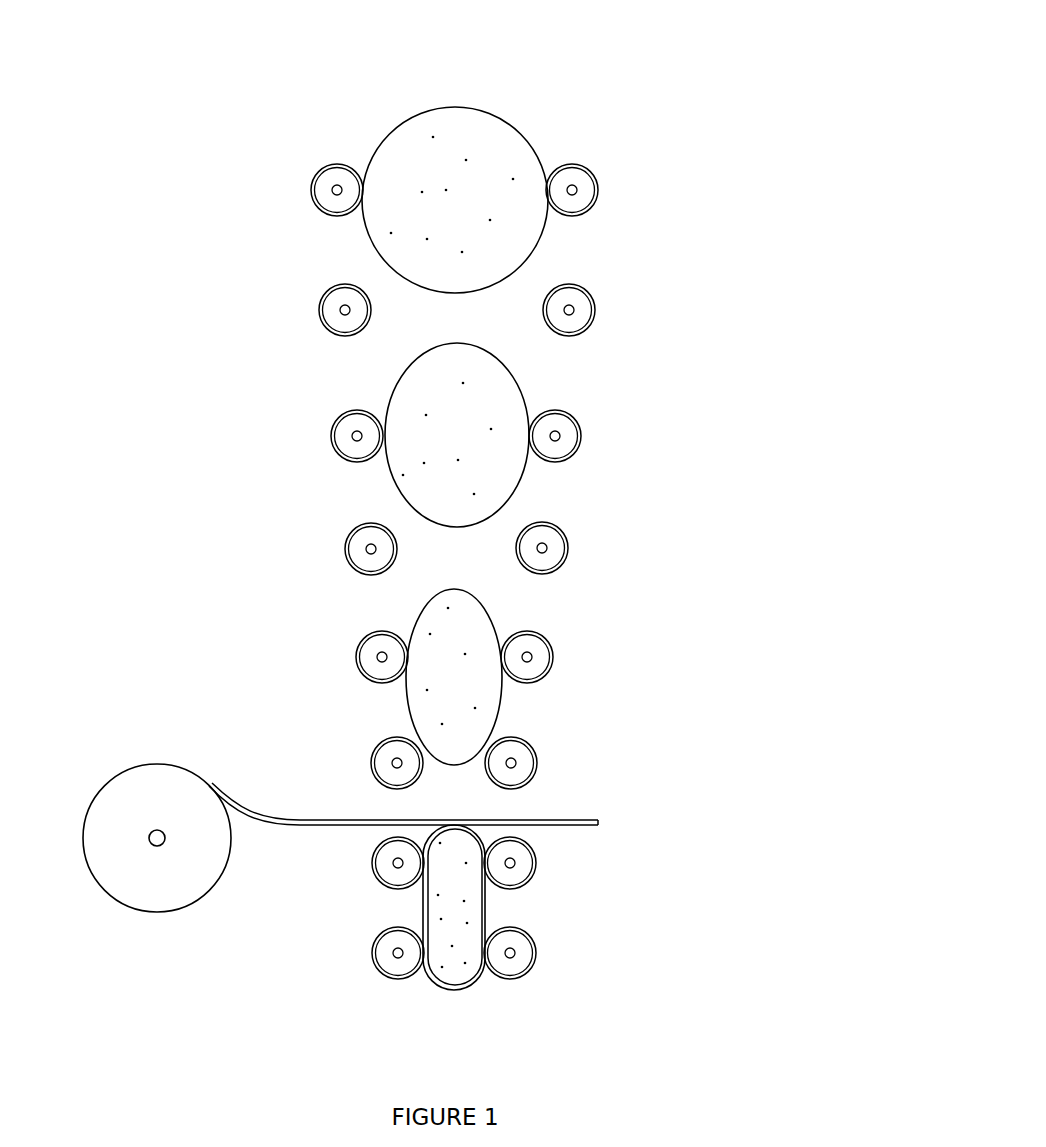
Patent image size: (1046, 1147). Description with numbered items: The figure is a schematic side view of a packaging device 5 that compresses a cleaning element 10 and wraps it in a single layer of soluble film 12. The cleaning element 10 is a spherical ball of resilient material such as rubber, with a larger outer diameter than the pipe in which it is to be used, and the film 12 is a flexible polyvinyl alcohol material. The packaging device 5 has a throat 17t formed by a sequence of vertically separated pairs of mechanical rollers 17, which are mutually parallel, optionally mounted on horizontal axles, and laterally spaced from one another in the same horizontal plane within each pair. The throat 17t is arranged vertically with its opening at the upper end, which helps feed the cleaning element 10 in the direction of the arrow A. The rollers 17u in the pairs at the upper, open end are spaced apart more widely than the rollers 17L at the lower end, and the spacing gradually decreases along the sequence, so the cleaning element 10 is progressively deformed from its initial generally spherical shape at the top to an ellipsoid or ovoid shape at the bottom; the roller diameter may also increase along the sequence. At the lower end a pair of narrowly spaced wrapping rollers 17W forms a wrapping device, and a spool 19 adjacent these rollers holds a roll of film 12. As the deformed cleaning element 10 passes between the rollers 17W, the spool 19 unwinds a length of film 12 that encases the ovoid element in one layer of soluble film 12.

The packaging device 5 is at (636, 154).
The cleaning element 10 is at (402, 147).
The soluble film 12 is at (579, 820).
The mechanical rollers 17 is at (577, 423).
The throat 17t is at (557, 137).
The upper rollers 17u is at (625, 190).
The wrapping rollers 17W is at (535, 863).
The lower rollers 17L is at (639, 955).
The spool 19 is at (137, 765).
The arrow A is at (456, 85).